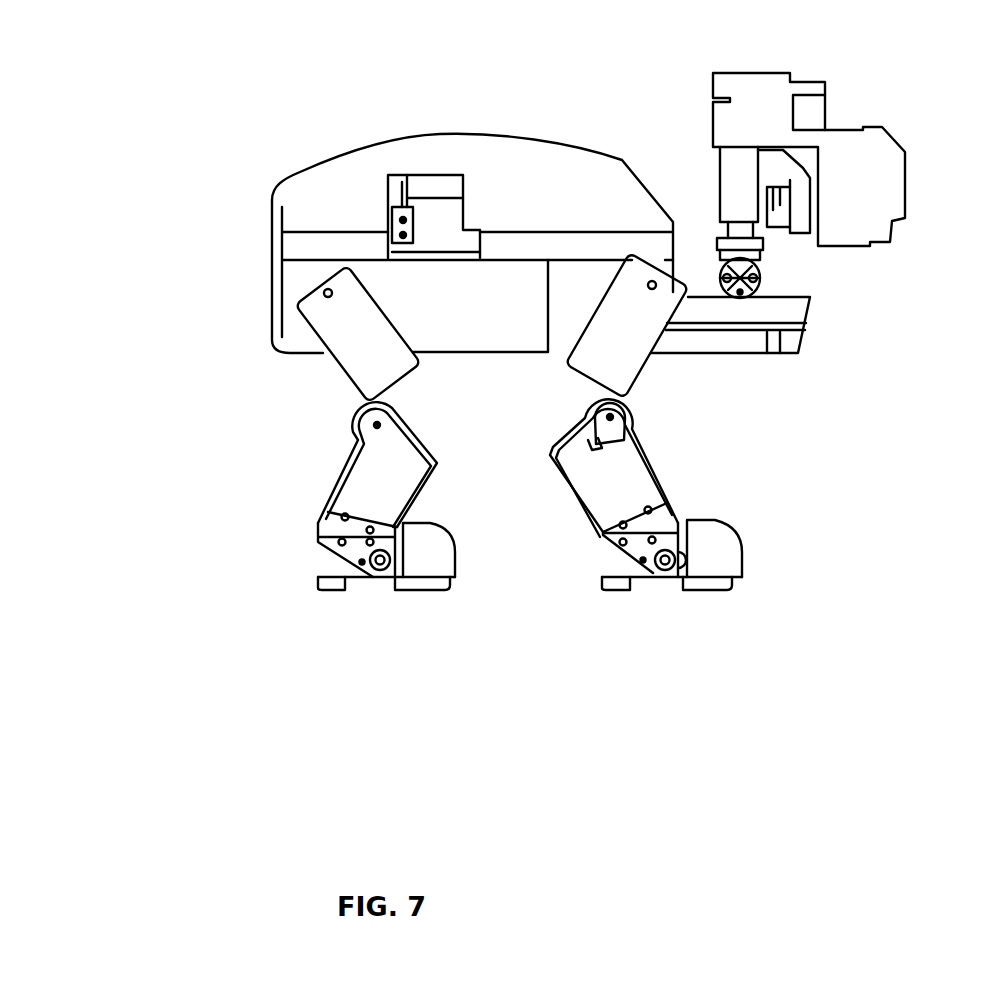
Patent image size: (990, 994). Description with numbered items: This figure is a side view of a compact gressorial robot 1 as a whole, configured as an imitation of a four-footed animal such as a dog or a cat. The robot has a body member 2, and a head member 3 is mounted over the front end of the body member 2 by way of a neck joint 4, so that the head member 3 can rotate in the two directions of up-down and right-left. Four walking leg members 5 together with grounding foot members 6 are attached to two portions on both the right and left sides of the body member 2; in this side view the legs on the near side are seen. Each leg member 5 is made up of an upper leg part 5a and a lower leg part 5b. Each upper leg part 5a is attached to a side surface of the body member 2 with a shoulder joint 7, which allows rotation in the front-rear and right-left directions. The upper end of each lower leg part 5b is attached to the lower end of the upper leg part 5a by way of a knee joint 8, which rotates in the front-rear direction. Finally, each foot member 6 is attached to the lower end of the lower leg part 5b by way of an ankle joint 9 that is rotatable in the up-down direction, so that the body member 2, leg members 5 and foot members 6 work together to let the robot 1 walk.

The gressorial robot 1 is at (913, 132).
The body member 2 is at (490, 157).
The head member 3 is at (807, 125).
The neck joint 4 is at (762, 272).
The walking leg member 5 is at (212, 383).
The upper leg part 5a is at (333, 333).
The lower leg part 5b is at (360, 485).
The foot member 6 is at (431, 573).
The shoulder joint 7 is at (328, 289).
The knee joint 8 is at (379, 424).
The ankle joint 9 is at (375, 573).